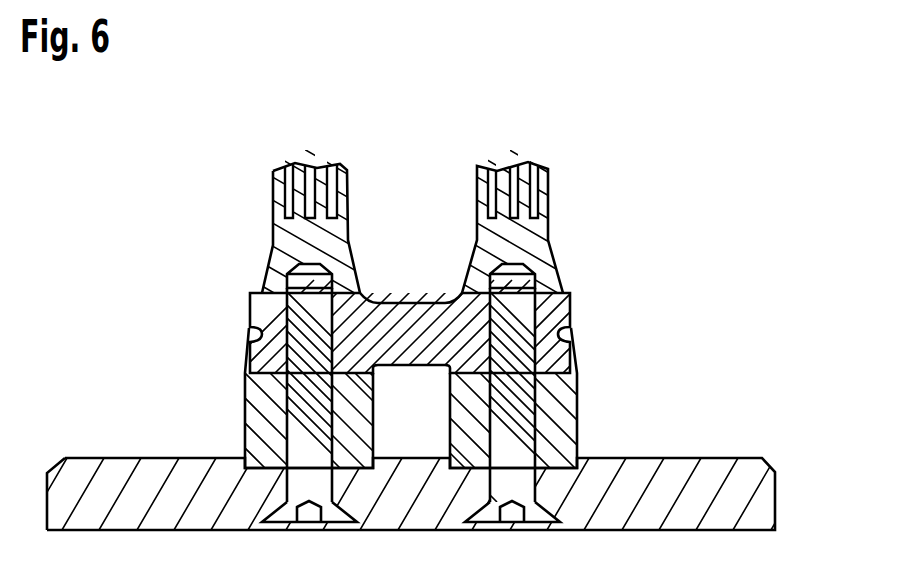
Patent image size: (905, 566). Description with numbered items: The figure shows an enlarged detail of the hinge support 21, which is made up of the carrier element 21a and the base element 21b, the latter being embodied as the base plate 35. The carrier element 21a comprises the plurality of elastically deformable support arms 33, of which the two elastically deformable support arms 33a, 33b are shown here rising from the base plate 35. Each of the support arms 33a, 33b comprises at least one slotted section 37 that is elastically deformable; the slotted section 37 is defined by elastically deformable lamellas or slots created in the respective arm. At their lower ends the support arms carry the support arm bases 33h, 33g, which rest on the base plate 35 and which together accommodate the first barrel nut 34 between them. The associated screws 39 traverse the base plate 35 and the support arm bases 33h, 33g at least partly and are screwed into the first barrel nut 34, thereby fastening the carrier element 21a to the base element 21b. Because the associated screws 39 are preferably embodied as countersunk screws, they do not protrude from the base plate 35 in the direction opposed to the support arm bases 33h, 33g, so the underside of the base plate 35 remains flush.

The hinge support 21 is at (606, 149).
The carrier element 21a is at (265, 175).
The base element 21b is at (768, 461).
The elastically deformable support arms 33 is at (267, 213).
The elastically deformable support arm 33a is at (352, 173).
The elastically deformable support arm 33b is at (476, 178).
The support arm base 33g is at (580, 437).
The support arm base 33h is at (243, 437).
The first barrel nut 34 is at (413, 300).
The base plate 35 is at (83, 470).
The slotted section 37 is at (270, 192).
The screws 39 is at (303, 387).